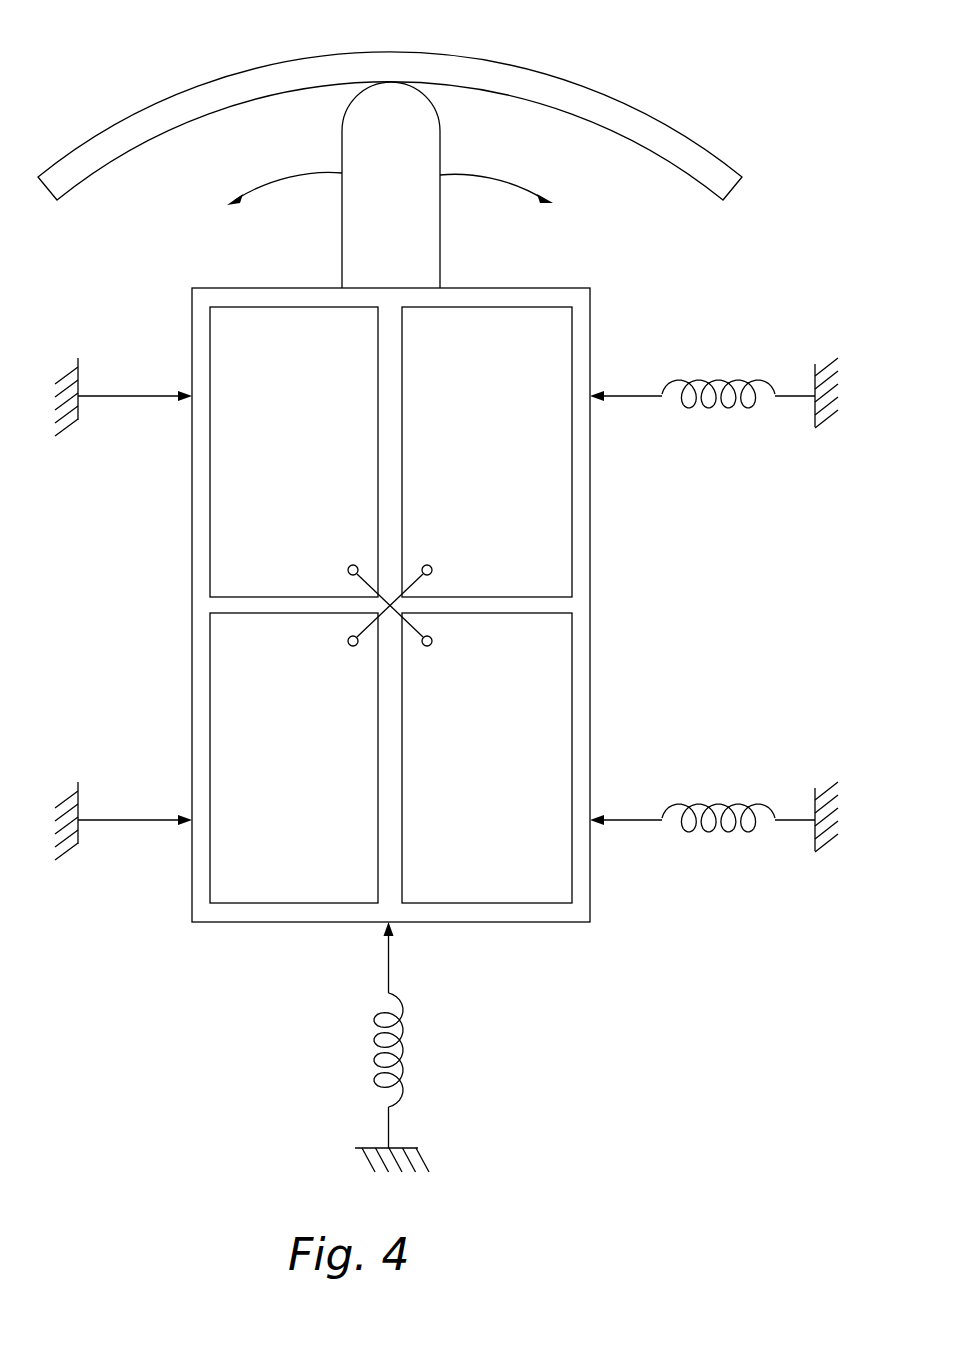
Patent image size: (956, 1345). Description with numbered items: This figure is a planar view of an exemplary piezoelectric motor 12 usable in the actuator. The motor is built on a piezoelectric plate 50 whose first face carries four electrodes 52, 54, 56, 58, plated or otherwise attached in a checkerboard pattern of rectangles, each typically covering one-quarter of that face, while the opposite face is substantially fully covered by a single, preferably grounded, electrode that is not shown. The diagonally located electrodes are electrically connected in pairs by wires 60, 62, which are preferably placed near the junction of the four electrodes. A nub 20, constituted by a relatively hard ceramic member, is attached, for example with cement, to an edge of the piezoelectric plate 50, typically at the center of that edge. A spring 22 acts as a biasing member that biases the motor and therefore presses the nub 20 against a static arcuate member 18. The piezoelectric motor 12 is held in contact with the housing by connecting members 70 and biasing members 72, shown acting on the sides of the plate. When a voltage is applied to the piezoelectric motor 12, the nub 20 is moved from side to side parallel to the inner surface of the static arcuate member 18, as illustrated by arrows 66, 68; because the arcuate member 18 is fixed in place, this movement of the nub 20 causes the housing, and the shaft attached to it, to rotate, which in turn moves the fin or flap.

The piezoelectric motor 12 is at (439, 644).
The static arcuate member 18 is at (98, 134).
The nub 20 is at (342, 143).
The spring 22 is at (377, 1052).
The piezoelectric plate 50 is at (580, 900).
The electrode 52 is at (311, 464).
The electrode 54 is at (505, 464).
The electrode 56 is at (311, 772).
The electrode 58 is at (505, 772).
The wire 60 is at (400, 598).
The wire 62 is at (385, 596).
The arrow 66 is at (500, 177).
The arrow 68 is at (283, 178).
The connecting member 70 is at (133, 397).
The biasing member 72 is at (709, 408).